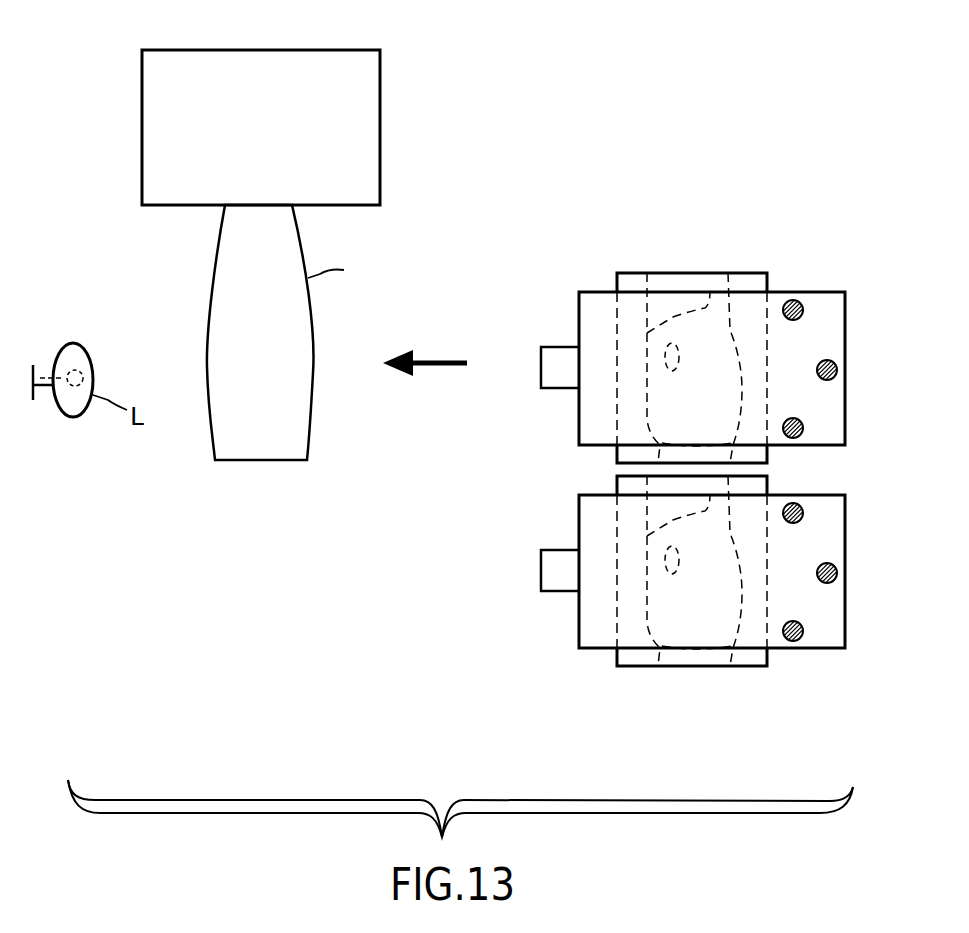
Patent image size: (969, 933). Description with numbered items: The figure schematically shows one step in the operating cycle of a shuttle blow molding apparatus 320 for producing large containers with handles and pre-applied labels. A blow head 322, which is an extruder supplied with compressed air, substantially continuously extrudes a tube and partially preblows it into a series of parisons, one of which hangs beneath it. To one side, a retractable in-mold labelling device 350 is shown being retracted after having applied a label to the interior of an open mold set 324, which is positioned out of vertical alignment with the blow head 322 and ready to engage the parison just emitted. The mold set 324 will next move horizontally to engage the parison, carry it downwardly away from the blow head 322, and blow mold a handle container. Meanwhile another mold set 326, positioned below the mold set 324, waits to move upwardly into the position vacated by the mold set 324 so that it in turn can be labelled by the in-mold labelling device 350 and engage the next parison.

The shuttle blow molding apparatus 320 is at (434, 51).
The blow head 322 is at (394, 134).
The mold set 324 is at (818, 313).
The mold set 326 is at (822, 515).
The retractable in-mold labelling device 350 is at (83, 344).